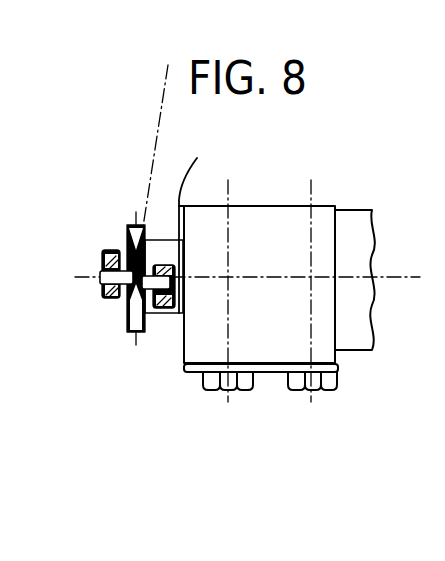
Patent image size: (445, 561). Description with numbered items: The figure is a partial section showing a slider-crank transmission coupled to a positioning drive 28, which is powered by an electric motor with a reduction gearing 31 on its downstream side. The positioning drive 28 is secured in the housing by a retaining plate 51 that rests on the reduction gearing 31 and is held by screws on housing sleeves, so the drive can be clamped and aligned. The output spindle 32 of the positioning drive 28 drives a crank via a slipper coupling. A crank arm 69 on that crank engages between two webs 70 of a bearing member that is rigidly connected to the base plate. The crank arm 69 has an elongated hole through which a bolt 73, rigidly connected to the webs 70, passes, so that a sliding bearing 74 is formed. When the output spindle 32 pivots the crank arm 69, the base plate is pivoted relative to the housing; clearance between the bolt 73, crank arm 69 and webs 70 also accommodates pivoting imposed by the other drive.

The positioning drive 28 is at (286, 195).
The reduction gearing 31 is at (281, 252).
The output spindle 32 is at (180, 221).
The retaining plate 51 is at (269, 372).
The crank arm 69 is at (129, 226).
The webs 70 is at (102, 300).
The bolt 73 is at (100, 274).
The sliding bearing 74 is at (95, 245).